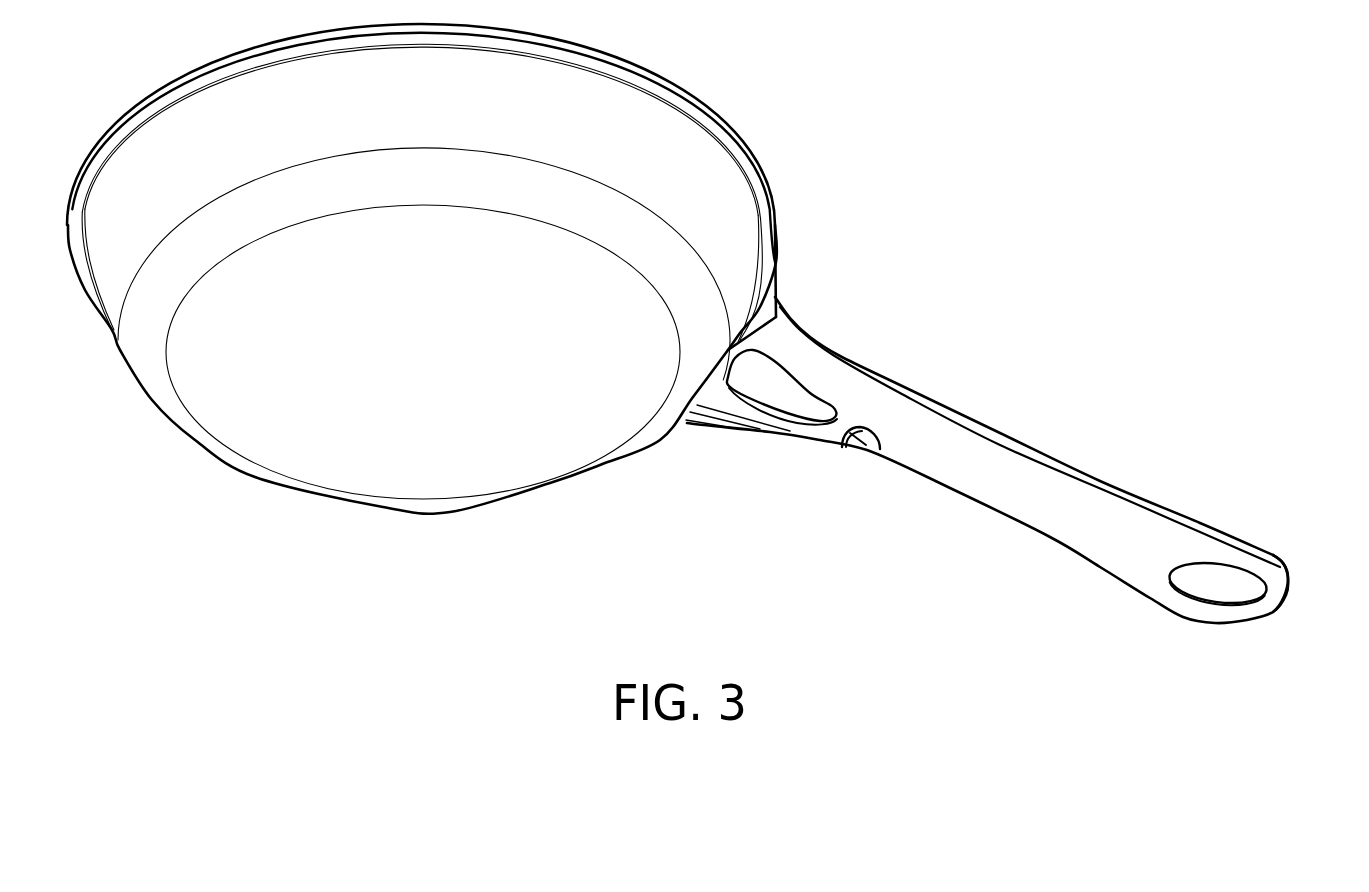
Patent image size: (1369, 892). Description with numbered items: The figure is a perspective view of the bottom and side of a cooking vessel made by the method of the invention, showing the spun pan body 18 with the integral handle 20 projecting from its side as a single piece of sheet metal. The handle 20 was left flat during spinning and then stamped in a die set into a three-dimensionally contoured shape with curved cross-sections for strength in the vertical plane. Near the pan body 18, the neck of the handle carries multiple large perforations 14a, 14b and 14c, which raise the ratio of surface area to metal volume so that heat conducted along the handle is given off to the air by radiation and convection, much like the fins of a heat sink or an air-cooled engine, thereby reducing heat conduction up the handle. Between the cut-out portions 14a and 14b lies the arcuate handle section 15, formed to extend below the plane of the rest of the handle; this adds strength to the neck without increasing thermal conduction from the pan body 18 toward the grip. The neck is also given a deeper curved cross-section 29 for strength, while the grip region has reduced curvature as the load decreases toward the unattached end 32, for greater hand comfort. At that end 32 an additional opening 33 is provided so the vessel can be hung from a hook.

The pan body 18 is at (440, 356).
The handle 20 is at (1133, 523).
The deeper curved cross-section 29 is at (878, 405).
The handle section 15 is at (797, 427).
The perforation 14a is at (767, 381).
The perforation 14b is at (703, 410).
The perforation 14c is at (867, 453).
The unattached end 32 is at (1290, 582).
The opening 33 is at (1230, 593).